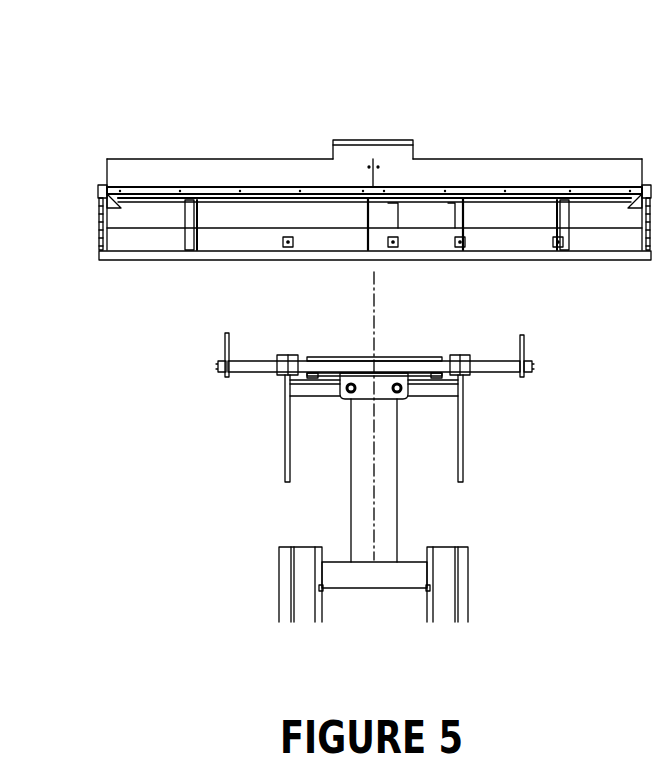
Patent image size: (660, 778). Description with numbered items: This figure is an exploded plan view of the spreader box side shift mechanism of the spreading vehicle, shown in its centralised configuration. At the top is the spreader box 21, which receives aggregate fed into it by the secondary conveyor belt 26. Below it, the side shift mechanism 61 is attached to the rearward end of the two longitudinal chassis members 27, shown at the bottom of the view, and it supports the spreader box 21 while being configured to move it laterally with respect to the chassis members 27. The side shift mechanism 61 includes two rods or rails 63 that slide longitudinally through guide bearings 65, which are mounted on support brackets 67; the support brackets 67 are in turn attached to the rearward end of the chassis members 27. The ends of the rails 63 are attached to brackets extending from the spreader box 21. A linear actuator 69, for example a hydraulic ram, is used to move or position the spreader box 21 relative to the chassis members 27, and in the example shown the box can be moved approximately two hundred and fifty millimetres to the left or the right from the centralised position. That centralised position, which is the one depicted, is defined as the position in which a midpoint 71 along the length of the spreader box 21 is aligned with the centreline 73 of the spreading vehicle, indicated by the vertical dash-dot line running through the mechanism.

The spreader box 21 is at (594, 157).
The secondary conveyor belt 26 is at (340, 560).
The longitudinal chassis members 27 is at (279, 574).
The side shift mechanism 61 is at (222, 431).
The rods or rails 63 is at (490, 374).
The guide bearings 65 is at (284, 356).
The support brackets 67 is at (464, 452).
The linear actuator 69 is at (408, 356).
The midpoint 71 is at (375, 304).
The centreline 73 is at (376, 487).